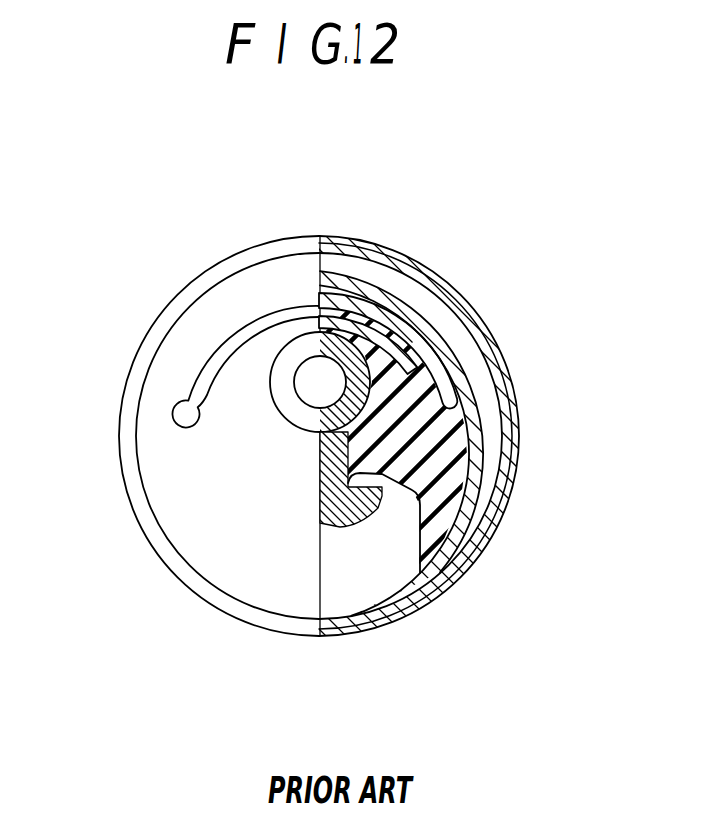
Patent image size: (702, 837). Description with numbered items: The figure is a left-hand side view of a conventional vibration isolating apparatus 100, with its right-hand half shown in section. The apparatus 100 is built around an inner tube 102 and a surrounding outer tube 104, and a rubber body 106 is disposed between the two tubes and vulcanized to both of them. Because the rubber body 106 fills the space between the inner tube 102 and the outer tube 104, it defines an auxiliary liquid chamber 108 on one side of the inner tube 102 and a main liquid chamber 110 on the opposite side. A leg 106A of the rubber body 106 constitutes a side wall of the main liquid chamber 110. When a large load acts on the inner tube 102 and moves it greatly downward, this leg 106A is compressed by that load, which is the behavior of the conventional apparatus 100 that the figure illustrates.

The vibration isolating apparatus 100 is at (474, 225).
The inner tube 102 is at (290, 338).
The outer tube 104 is at (484, 333).
The rubber body 106 is at (175, 481).
The leg 106A is at (447, 478).
The auxiliary liquid chamber 108 is at (412, 320).
The main liquid chamber 110 is at (370, 594).